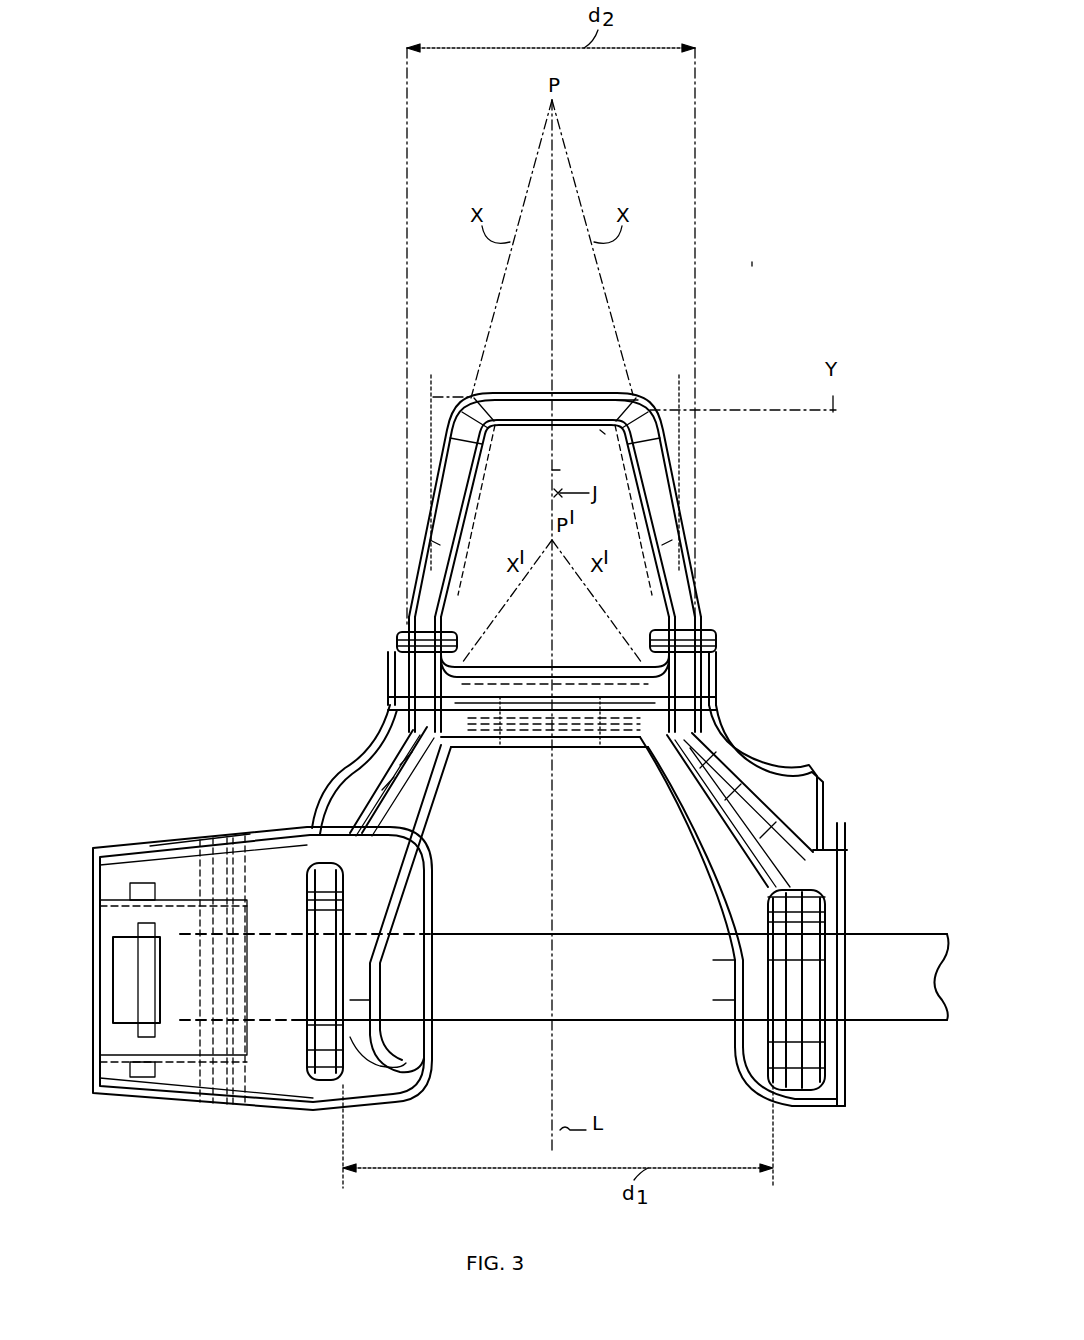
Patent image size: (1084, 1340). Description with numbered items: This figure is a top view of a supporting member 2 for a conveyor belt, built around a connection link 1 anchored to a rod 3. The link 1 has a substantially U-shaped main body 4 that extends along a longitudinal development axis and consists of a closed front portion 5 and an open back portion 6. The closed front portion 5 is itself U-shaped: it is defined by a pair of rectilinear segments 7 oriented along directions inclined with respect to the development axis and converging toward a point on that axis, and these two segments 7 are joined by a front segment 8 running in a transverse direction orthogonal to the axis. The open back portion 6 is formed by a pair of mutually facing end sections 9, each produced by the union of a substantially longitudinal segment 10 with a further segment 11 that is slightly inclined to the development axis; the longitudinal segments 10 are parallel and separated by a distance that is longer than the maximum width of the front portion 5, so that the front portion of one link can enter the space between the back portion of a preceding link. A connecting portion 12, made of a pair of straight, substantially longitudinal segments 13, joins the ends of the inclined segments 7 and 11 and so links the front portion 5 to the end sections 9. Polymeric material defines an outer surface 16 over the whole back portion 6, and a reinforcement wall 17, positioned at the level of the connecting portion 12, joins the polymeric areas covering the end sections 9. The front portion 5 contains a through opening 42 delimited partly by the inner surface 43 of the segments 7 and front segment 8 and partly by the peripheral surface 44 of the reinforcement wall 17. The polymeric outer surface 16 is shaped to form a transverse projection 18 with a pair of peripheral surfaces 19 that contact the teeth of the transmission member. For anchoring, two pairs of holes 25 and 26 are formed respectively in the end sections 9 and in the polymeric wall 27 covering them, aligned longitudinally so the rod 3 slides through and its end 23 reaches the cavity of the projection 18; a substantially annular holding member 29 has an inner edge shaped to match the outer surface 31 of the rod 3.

The connection link 1 is at (752, 265).
The supporting member 2 is at (288, 1118).
The rod 3 is at (912, 945).
The main body 4 is at (700, 490).
The closed front portion 5 is at (648, 402).
The open back portion 6 is at (318, 825).
The rectilinear segments 7 is at (438, 520).
The front segment 8 is at (522, 395).
The end sections 9 is at (346, 792).
The longitudinal segment 10 is at (308, 920).
The inclined segment 11 is at (380, 772).
The connecting portion 12 is at (404, 628).
The straight segments 13 is at (462, 655).
The outer surface 16 is at (390, 665).
The reinforcement wall 17 is at (598, 712).
The transverse projection 18 is at (182, 828).
The peripheral surfaces 19 is at (155, 840).
The ends of the rod 23 is at (112, 977).
The holes 25 is at (308, 1032).
The holes 26 is at (430, 928).
The wall 27 is at (420, 1045).
The holding member 29 is at (150, 925).
The outer surface of the rod 31 is at (600, 1026).
The opening 42 is at (592, 480).
The inner surface 43 is at (514, 430).
The peripheral surface 44 is at (570, 670).